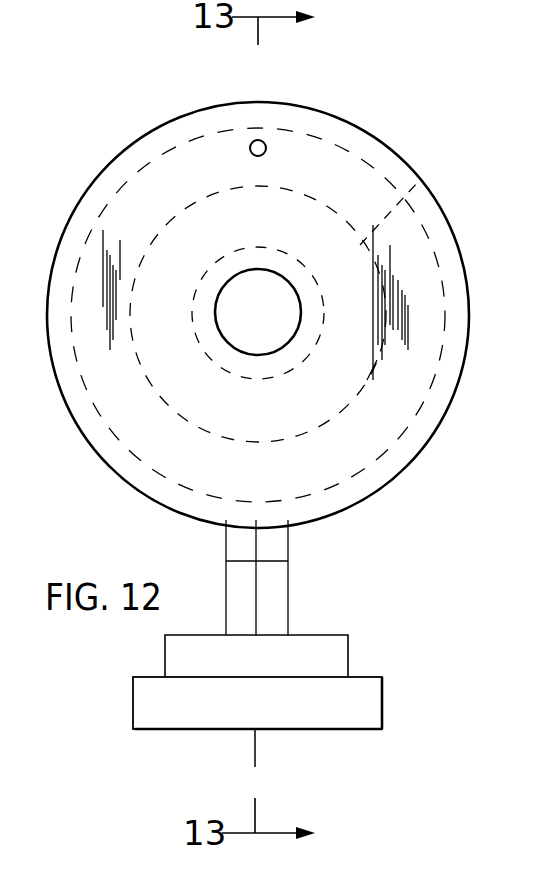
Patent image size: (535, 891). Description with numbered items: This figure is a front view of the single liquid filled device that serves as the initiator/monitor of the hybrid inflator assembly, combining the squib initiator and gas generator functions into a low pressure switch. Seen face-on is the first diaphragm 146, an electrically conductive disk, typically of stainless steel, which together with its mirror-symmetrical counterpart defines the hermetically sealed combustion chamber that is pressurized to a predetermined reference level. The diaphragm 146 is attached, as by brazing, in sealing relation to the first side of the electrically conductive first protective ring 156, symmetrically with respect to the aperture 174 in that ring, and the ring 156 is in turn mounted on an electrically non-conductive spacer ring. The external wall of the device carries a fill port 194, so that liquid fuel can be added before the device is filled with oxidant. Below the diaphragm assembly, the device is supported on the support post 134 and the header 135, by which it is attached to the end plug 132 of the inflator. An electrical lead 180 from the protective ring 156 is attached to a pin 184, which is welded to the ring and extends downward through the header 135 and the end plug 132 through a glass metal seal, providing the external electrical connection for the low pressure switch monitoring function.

The end plug 132 is at (357, 707).
The support post 134 is at (288, 542).
The header 135 is at (335, 657).
The first diaphragm 146 is at (428, 183).
The first protective ring 156 is at (375, 163).
The aperture 174 is at (268, 340).
The electrical lead 180 is at (253, 607).
The pin 184 is at (255, 757).
The fill port 194 is at (261, 145).